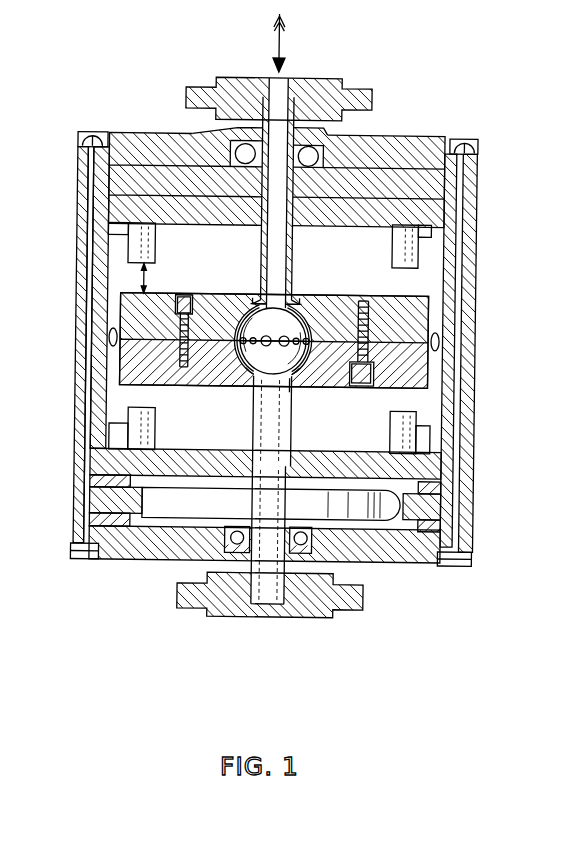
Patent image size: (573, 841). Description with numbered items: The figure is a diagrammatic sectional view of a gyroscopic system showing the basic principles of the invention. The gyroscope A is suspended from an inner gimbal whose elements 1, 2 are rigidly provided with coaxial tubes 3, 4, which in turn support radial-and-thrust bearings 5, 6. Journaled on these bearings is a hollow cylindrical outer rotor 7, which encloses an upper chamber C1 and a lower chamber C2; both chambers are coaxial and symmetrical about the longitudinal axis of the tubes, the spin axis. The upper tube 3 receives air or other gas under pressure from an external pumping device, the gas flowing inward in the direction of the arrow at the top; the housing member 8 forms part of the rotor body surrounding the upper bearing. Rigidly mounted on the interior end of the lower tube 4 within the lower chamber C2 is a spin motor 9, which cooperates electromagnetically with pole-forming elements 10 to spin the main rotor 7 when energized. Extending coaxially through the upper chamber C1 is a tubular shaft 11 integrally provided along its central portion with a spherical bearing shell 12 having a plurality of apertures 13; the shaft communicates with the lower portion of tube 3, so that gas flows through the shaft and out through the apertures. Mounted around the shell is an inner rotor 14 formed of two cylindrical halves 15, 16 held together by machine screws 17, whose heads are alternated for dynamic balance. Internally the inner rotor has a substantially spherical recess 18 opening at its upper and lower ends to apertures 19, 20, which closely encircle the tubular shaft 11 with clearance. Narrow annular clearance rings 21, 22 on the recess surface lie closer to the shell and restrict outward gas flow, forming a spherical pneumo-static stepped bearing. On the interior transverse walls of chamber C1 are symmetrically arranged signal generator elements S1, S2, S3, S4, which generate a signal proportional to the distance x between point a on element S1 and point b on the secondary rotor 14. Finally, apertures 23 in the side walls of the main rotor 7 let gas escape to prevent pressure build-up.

The inner gimbal element 1 is at (327, 78).
The inner gimbal element 2 is at (321, 611).
The upper tube 3 is at (317, 130).
The lower tube 4 is at (266, 606).
The radial-and-thrust bearing 5 is at (197, 138).
The radial-and-thrust bearing 6 is at (227, 544).
The outer rotor 7 is at (430, 136).
The upper housing member 8 is at (155, 165).
The spin motor 9 is at (379, 500).
The pole-forming elements 10 is at (72, 503).
The tubular shaft 11 is at (292, 257).
The spherical bearing shell 12 is at (258, 387).
The apertures 13 is at (265, 338).
The inner rotor 14 is at (412, 306).
The cylindrical half 15 is at (133, 304).
The cylindrical half 16 is at (137, 365).
The machine screws 17 is at (182, 298).
The spherical recess 18 is at (247, 301).
The aperture 19 is at (259, 296).
The aperture 20 is at (293, 387).
The annular clearance ring 21 is at (257, 302).
The annular clearance ring 22 is at (311, 380).
The apertures 23 is at (106, 339).
The gyroscope A is at (85, 132).
The signal generator element S1 is at (146, 240).
The signal generator element S2 is at (409, 242).
The signal generator element S3 is at (134, 422).
The signal generator element S4 is at (418, 449).
The upper chamber C1 is at (231, 243).
The lower chamber C2 is at (409, 450).
The point a is at (129, 269).
The point b is at (119, 286).
The distance x is at (162, 283).